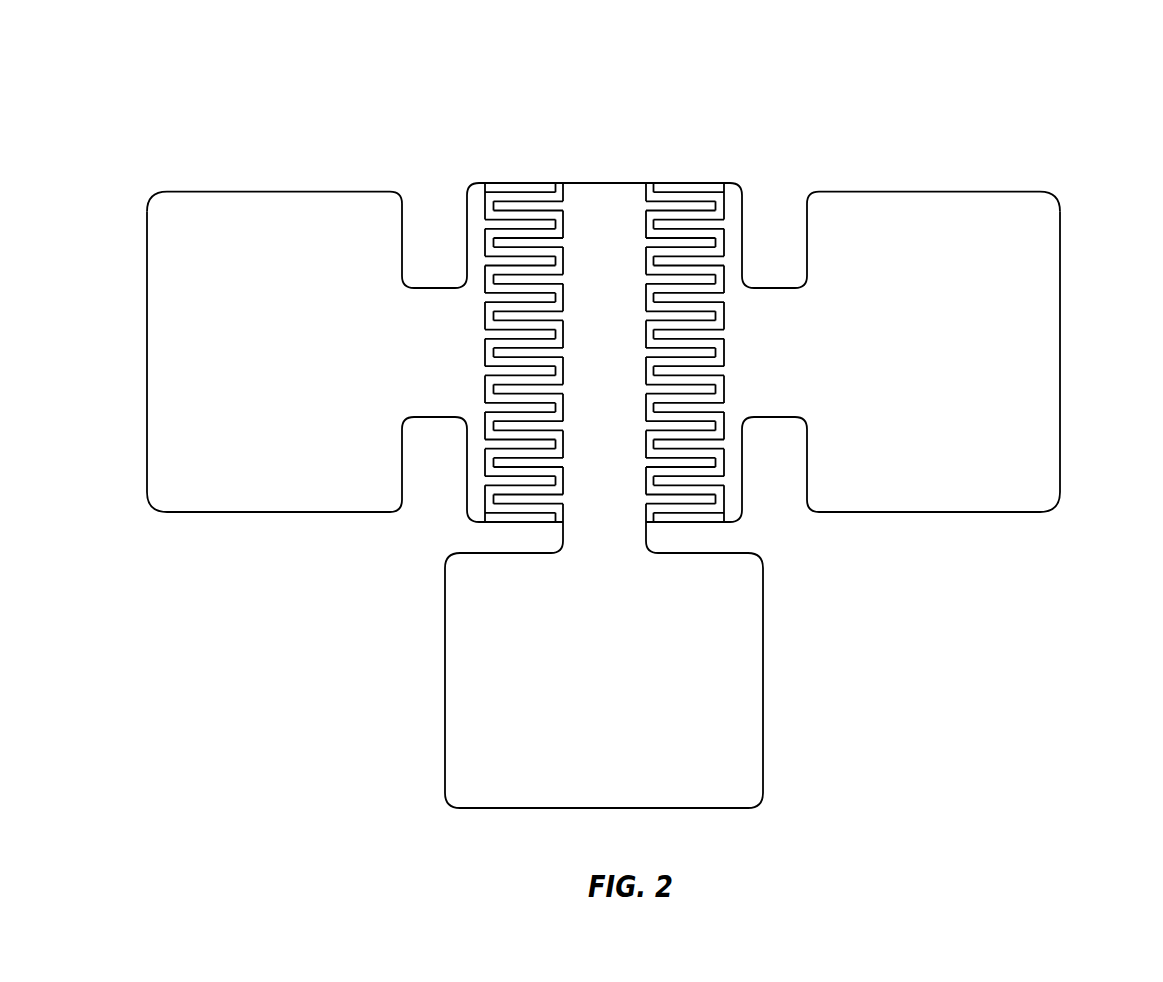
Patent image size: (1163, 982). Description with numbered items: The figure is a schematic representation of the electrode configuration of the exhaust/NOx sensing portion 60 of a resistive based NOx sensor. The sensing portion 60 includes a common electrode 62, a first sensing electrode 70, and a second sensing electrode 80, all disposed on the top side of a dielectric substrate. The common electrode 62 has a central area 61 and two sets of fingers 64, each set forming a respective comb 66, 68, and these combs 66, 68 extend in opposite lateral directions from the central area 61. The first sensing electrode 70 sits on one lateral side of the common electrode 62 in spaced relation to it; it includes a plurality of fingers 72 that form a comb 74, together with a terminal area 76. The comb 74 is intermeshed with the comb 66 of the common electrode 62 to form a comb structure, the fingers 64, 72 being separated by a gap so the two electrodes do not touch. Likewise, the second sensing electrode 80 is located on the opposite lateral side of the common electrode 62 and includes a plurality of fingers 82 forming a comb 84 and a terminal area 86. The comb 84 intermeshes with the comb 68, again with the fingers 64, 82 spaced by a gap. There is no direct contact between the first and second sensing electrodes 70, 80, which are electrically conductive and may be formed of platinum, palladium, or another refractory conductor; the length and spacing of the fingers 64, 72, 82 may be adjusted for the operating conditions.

The sensing portion 60 is at (603, 417).
The central area 61 is at (608, 522).
The common electrode 62 is at (723, 713).
The fingers 64 is at (525, 462).
The comb 66 is at (537, 176).
The comb 68 is at (671, 176).
The first sensing electrode 70 is at (147, 292).
The fingers 72 is at (523, 223).
The comb 74 is at (510, 165).
The terminal area 76 is at (278, 218).
The second sensing electrode 80 is at (1060, 278).
The fingers 82 is at (677, 242).
The comb 84 is at (698, 166).
The terminal area 86 is at (953, 217).